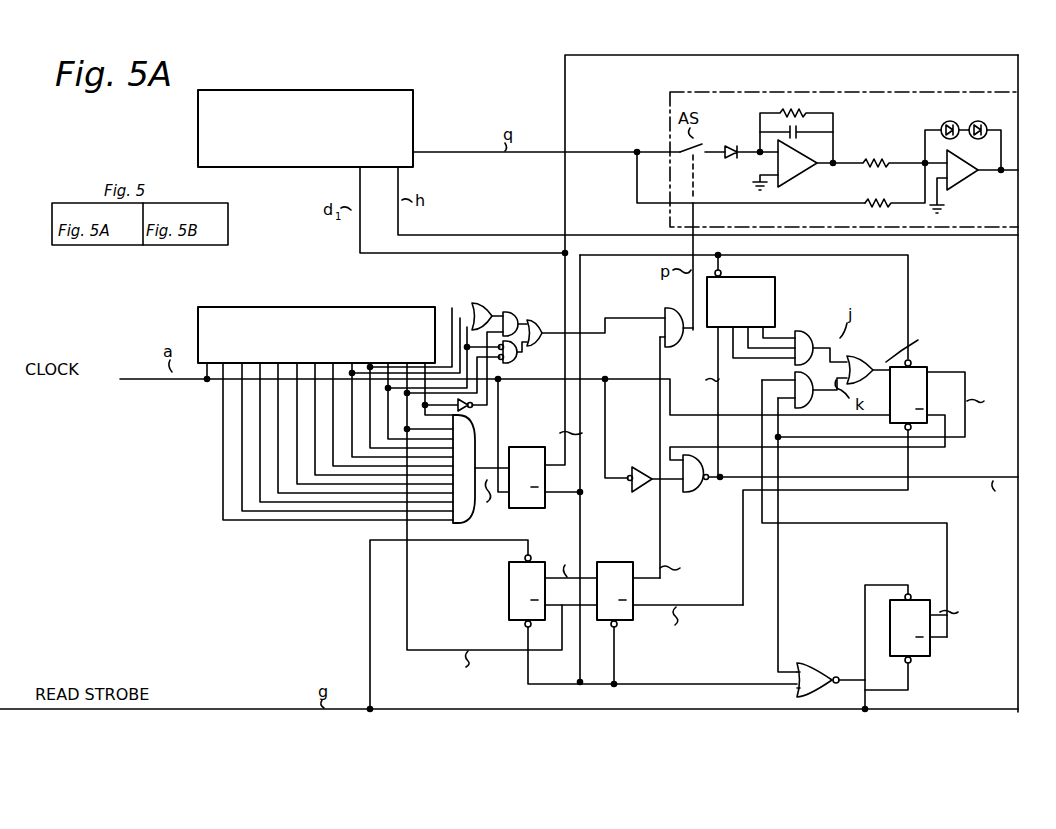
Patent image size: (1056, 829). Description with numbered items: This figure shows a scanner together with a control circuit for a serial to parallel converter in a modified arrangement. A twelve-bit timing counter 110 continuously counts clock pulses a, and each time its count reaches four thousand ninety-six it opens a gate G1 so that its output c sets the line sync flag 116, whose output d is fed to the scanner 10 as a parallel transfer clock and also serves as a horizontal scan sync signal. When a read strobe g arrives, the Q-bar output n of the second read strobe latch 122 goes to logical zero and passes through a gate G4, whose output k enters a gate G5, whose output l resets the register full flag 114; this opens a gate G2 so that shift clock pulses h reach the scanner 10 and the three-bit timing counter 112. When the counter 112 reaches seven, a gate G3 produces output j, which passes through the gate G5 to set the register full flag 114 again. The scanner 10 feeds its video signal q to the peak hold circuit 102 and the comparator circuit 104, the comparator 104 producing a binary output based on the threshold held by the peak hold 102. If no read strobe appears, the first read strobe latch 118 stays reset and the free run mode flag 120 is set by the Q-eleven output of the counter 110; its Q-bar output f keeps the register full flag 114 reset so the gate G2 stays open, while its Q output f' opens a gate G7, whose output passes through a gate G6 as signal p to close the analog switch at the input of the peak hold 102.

The scanner 10 is at (387, 91).
The peak hold circuit 102 is at (745, 126).
The comparator circuit 104 is at (905, 128).
The 12-bit timing counter 110 is at (400, 305).
The 3-bit timing counter 112 is at (776, 292).
The register full flag 114 is at (925, 359).
The line sync flag 116 is at (530, 448).
The first read strobe latch 118 is at (509, 584).
The free run mode flag 120 is at (619, 560).
The second read strobe latch 122 is at (930, 598).
The gate G1 is at (484, 450).
The gate G2 is at (697, 493).
The gate G3 is at (807, 332).
The gate G4 is at (806, 408).
The gate G5 is at (867, 357).
The gate G6 is at (527, 320).
The gate G7 is at (665, 312).